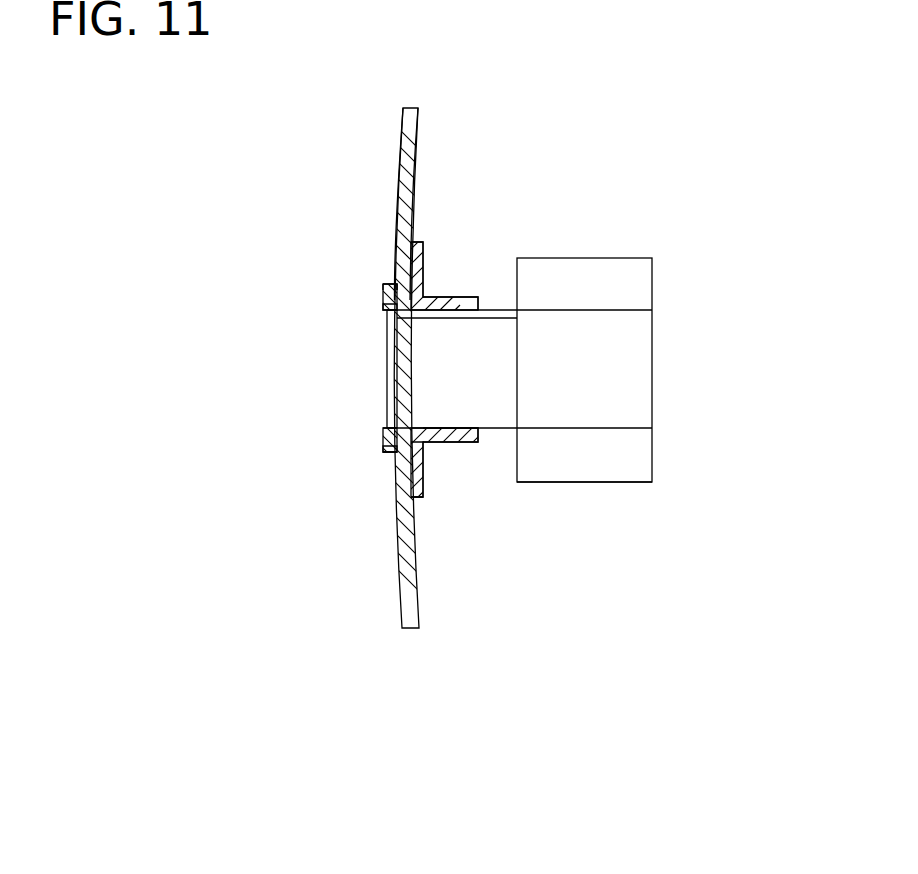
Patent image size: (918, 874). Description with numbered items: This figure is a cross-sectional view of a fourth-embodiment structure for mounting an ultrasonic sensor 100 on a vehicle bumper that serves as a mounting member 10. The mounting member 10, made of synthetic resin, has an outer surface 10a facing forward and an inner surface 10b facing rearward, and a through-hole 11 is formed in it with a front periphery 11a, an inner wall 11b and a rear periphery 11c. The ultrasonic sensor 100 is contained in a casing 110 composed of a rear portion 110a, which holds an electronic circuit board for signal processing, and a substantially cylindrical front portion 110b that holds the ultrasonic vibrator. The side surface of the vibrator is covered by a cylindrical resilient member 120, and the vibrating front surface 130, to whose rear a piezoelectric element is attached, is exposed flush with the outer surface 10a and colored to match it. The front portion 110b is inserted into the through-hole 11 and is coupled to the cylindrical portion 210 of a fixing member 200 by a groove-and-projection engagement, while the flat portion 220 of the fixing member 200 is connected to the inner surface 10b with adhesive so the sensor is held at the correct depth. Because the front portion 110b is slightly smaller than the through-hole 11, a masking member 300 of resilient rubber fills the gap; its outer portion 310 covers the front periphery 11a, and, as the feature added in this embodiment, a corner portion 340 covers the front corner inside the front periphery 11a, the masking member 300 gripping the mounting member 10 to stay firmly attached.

The mounting member 10 is at (399, 198).
The outer surface of mounting member 10a is at (402, 134).
The inner surface of mounting member 10b is at (418, 142).
The through-hole 11 is at (383, 427).
The front periphery of through-hole 11a is at (390, 270).
The inner wall of through-hole 11b is at (391, 455).
The rear periphery of through-hole 11c is at (413, 505).
The ultrasonic sensor 100 is at (675, 248).
The casing 110 is at (652, 378).
The rear portion of casing 110a is at (580, 470).
The front portion of casing 110b is at (486, 405).
The cylindrical resilient member 120 is at (388, 397).
The vibrating front surface 130 is at (388, 356).
The fixing member 200 is at (507, 207).
The cylindrical portion of fixing member 210 is at (466, 302).
The flat portion of fixing member 220 is at (421, 242).
The masking member 300 is at (374, 301).
The outer portion of masking member 310 is at (388, 286).
The corner portion of masking member 340 is at (388, 311).